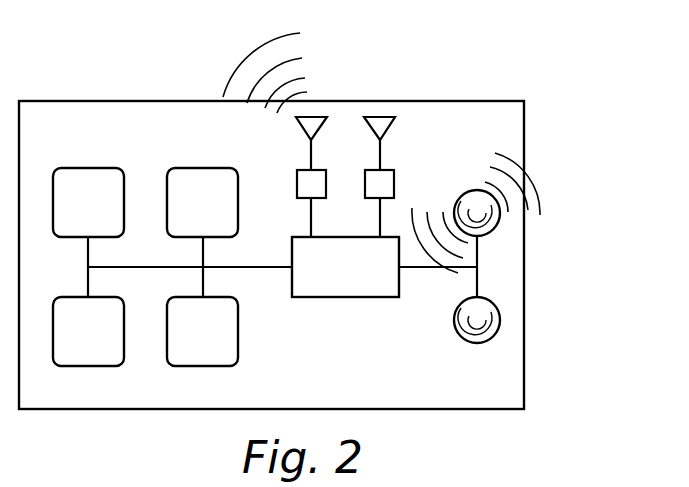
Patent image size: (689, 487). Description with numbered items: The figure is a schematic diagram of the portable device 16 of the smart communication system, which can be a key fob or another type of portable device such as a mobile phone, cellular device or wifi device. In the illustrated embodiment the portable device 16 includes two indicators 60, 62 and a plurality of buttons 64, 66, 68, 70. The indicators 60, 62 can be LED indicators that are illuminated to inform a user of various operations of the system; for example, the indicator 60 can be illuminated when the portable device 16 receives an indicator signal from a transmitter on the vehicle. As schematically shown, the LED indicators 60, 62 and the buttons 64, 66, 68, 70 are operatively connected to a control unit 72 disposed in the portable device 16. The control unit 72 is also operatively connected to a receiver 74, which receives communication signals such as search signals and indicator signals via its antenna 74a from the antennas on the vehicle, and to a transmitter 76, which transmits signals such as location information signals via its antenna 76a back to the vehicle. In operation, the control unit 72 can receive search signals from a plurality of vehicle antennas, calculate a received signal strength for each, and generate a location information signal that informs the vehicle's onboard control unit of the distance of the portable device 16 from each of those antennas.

The portable device 16 is at (152, 112).
The indicator 60 is at (493, 226).
The indicator 62 is at (493, 326).
The button 64 is at (101, 343).
The button 66 is at (216, 343).
The button 68 is at (216, 214).
The button 70 is at (101, 214).
The control unit 72 is at (353, 297).
The receiver 74 is at (387, 185).
The antenna 74a is at (387, 131).
The transmitter 76 is at (302, 185).
The antenna 76a is at (316, 129).